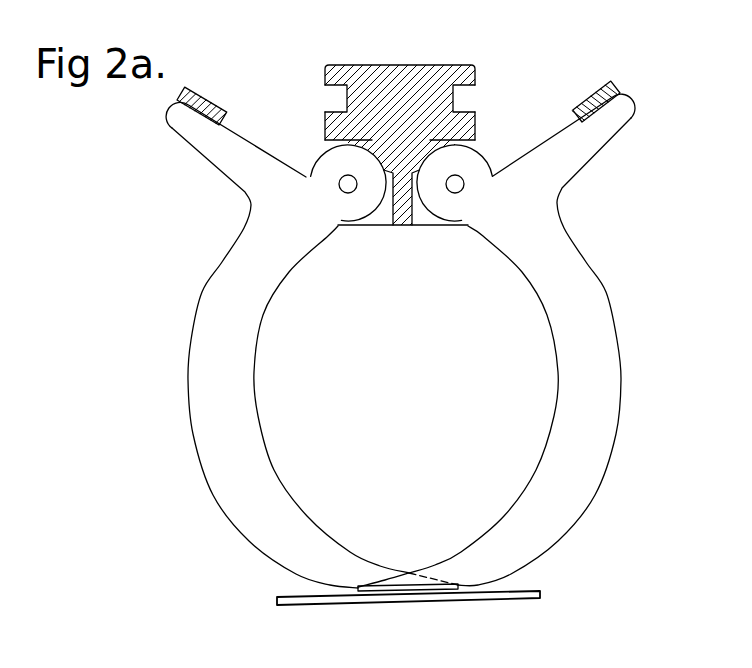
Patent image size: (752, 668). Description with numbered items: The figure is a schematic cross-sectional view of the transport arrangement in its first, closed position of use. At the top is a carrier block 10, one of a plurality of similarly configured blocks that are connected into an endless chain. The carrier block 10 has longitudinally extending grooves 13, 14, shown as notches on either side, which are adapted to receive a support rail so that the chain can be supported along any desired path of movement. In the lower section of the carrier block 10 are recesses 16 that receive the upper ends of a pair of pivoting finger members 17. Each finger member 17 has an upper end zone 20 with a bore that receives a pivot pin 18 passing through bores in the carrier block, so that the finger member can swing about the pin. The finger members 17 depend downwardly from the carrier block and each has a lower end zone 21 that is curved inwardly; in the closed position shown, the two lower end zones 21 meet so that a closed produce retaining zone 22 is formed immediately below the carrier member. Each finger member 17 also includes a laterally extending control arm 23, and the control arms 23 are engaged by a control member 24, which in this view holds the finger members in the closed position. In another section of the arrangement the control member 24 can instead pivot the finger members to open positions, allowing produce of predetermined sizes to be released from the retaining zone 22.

The carrier block 10 is at (432, 100).
The longitudinally extending groove 13 is at (332, 100).
The longitudinally extending groove 14 is at (463, 100).
The recess 16 is at (327, 143).
The pivoting finger member 17 is at (598, 383).
The pivot pin 18 is at (466, 173).
The upper end zone 20 is at (319, 216).
The lower end zone 21 is at (357, 573).
The produce retaining zone 22 is at (396, 390).
The control arm 23 is at (183, 128).
The control member 24 is at (200, 91).